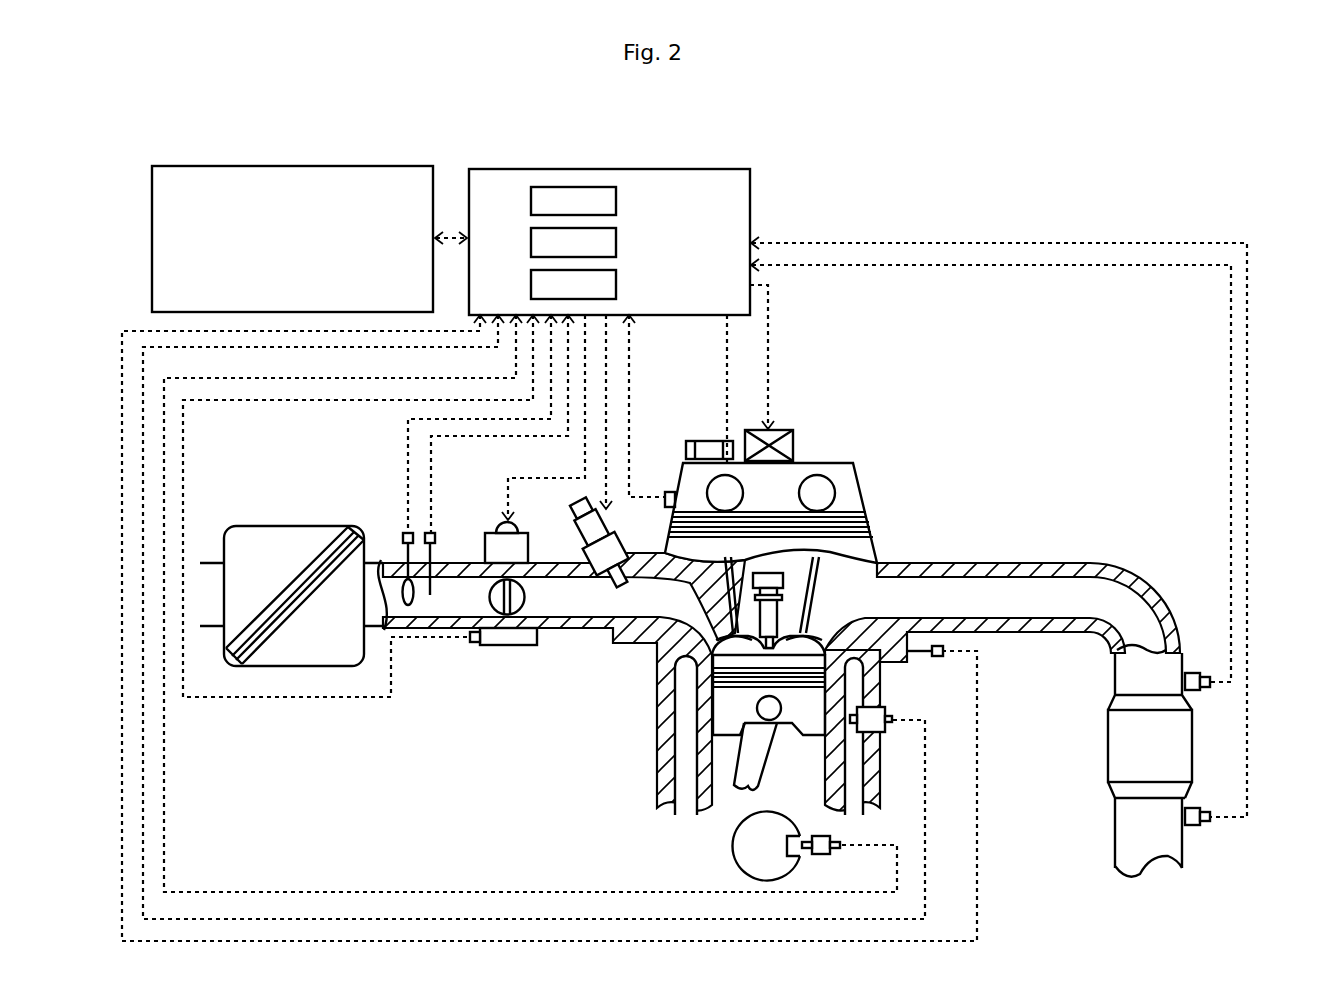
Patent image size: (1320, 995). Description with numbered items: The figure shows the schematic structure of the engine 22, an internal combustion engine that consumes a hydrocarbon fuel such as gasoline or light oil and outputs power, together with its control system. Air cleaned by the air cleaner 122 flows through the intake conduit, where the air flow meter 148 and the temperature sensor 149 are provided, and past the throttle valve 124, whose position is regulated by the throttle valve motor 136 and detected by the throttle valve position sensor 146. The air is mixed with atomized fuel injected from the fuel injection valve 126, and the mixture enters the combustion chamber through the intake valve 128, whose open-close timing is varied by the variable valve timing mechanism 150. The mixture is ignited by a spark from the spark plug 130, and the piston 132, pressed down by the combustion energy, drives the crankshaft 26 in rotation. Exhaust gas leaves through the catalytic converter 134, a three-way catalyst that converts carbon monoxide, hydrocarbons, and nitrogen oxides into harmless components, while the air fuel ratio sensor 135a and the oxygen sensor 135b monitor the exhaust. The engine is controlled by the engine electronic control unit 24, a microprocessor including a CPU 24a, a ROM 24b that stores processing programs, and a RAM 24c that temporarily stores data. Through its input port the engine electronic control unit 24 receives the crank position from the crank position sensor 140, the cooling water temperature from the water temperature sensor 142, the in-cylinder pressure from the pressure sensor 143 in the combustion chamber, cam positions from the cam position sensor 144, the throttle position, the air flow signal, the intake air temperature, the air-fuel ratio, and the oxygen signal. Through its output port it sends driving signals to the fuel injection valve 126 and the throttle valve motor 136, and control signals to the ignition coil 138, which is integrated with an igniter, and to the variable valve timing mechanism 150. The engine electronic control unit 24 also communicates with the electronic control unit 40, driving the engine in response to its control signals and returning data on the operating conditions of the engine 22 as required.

The electronic control unit 40 is at (295, 164).
The engine electronic control unit 24 is at (610, 169).
The CPU 24a is at (617, 199).
The ROM 24b is at (617, 240).
The RAM 24c is at (617, 282).
The engine 22 is at (827, 405).
The variable valve timing mechanism 150 is at (865, 502).
The ignition coil 138 is at (795, 447).
The cam position sensor 144 is at (666, 490).
The air cleaner 122 is at (293, 525).
The air flow meter 148 is at (402, 533).
The temperature sensor 149 is at (441, 533).
The throttle valve 124 is at (530, 562).
The throttle valve motor 136 is at (488, 530).
The throttle valve position sensor 146 is at (508, 647).
The fuel injection valve 126 is at (593, 560).
The intake valve 128 is at (740, 637).
The spark plug 130 is at (772, 628).
The piston 132 is at (730, 705).
The crankshaft 26 is at (733, 846).
The crank position sensor 140 is at (820, 856).
The water temperature sensor 142 is at (886, 710).
The pressure sensor 143 is at (945, 648).
The catalytic converter 134 is at (1120, 730).
The air fuel ratio sensor 135a is at (1187, 672).
The oxygen sensor 135b is at (1190, 828).